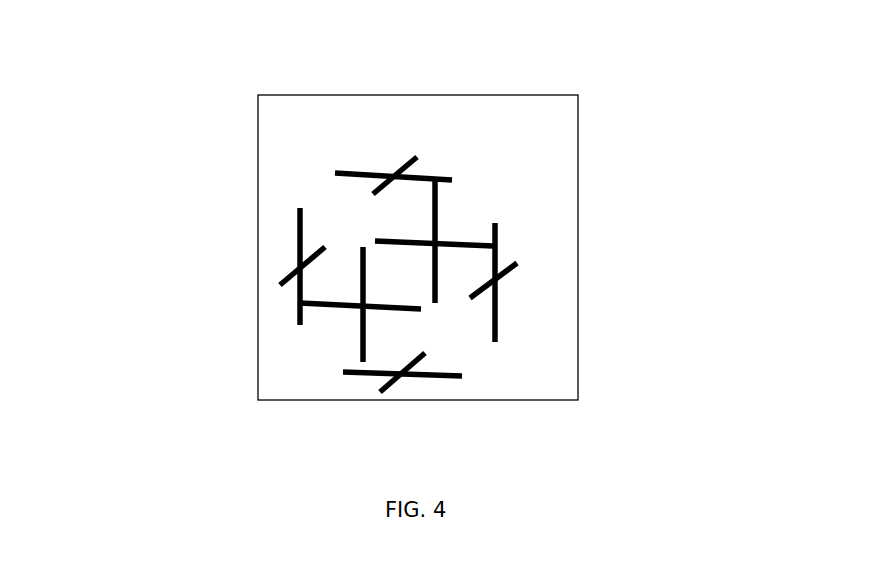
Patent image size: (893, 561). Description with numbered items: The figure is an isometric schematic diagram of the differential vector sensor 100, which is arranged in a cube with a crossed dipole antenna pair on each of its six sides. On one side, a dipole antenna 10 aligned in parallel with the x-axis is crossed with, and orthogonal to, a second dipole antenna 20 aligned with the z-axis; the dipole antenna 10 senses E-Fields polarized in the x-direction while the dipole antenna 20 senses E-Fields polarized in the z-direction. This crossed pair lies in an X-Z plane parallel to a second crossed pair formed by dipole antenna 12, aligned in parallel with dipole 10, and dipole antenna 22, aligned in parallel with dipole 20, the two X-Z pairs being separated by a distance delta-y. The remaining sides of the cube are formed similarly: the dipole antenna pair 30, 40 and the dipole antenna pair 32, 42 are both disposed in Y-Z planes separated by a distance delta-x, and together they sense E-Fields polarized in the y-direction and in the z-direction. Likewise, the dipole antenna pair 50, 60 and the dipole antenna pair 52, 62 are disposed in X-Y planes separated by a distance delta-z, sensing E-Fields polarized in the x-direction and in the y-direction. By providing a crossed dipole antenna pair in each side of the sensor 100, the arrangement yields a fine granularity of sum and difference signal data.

The differential vector sensor 100 is at (90, 100).
The dipole antenna 10 is at (280, 285).
The dipole antenna 12 is at (470, 298).
The second dipole antenna 20 is at (297, 220).
The dipole antenna 22 is at (493, 228).
The dipole antenna 30 is at (338, 306).
The dipole antenna 32 is at (453, 242).
The dipole antenna 40 is at (361, 323).
The dipole antenna 42 is at (436, 220).
The dipole antenna 50 is at (368, 173).
The dipole antenna 52 is at (389, 390).
The dipole antenna 60 is at (408, 158).
The dipole antenna 62 is at (437, 376).